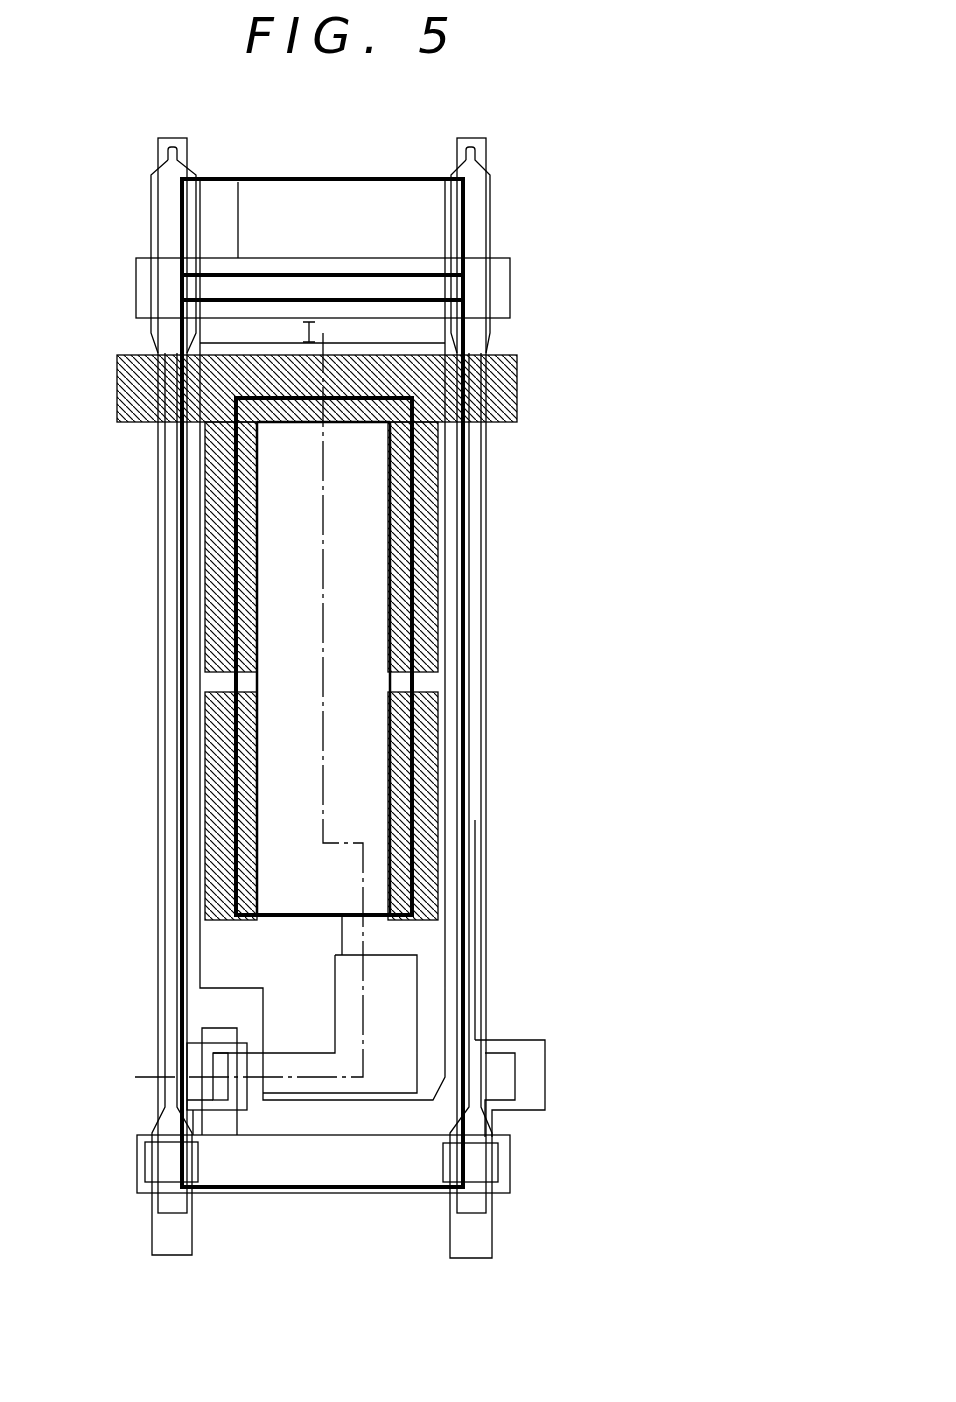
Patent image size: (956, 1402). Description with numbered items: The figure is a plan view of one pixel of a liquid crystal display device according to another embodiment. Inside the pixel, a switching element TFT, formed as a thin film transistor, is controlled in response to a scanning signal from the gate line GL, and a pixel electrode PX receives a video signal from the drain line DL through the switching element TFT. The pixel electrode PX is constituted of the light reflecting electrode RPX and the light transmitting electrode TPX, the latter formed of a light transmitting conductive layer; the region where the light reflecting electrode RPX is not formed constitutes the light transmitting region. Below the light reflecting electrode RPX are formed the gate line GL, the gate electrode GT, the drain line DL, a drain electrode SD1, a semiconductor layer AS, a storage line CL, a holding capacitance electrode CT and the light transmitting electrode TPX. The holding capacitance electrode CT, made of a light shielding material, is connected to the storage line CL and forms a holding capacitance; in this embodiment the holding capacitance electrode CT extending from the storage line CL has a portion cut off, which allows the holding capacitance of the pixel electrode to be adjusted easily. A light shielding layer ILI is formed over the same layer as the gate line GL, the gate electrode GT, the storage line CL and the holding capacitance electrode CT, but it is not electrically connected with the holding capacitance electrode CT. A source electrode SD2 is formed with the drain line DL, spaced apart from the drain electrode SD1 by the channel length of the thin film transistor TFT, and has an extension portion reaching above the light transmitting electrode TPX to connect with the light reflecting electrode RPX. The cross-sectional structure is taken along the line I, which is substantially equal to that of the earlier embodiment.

The gate line GL is at (515, 262).
The drain line DL is at (152, 1202).
The pixel electrode PX is at (455, 683).
The light reflecting electrode RPX is at (418, 295).
The light transmitting electrode TPX is at (412, 343).
The storage line CL is at (517, 400).
The holding capacitance electrode CT is at (427, 577).
The light shielding layer ILI is at (425, 765).
The gate electrode GT is at (217, 1027).
The line I- I is at (224, 710).
The drain electrode SD1 is at (210, 1100).
The source electrode SD2 is at (418, 1033).
The switching element (thin film transistor) TFT is at (262, 1113).
The semiconductor layer AS is at (173, 1258).